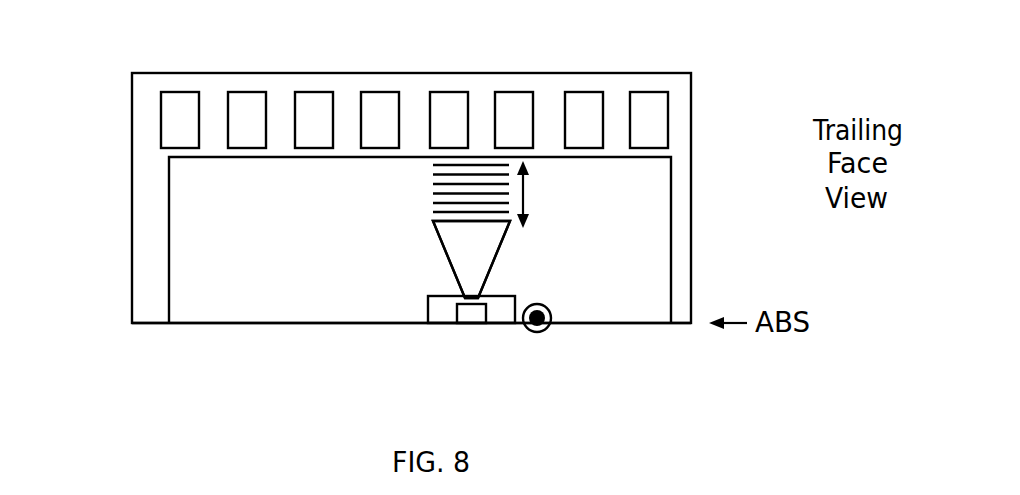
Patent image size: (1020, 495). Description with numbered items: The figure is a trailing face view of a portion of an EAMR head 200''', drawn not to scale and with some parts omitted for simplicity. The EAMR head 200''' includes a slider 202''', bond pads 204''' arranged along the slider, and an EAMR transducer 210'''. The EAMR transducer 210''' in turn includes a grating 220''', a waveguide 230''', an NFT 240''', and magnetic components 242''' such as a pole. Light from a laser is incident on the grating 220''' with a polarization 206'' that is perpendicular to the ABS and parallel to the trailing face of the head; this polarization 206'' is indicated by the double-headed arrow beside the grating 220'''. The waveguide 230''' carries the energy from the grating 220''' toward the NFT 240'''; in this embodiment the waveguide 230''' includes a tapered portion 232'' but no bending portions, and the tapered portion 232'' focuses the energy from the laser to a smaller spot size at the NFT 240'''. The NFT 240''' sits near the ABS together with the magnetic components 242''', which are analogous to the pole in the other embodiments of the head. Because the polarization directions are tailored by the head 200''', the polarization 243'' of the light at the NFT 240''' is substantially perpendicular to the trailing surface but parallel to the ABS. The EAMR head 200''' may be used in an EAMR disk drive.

The EAMR head 200''' is at (411, 170).
The slider 202''' is at (482, 240).
The bond pads 204''' is at (464, 138).
The polarization 206'' is at (642, 199).
The EAMR transducer 210''' is at (435, 349).
The grating 220''' is at (277, 210).
The waveguide 230''' is at (359, 305).
The tapered portion 232'' is at (362, 320).
The NFT 240''' is at (439, 335).
The magnetic components 242''' is at (415, 340).
The polarization 243'' is at (565, 341).